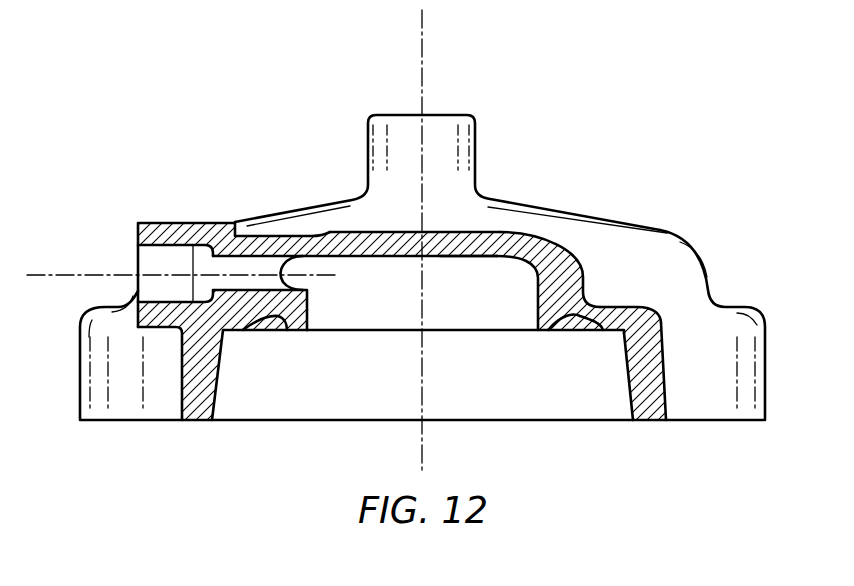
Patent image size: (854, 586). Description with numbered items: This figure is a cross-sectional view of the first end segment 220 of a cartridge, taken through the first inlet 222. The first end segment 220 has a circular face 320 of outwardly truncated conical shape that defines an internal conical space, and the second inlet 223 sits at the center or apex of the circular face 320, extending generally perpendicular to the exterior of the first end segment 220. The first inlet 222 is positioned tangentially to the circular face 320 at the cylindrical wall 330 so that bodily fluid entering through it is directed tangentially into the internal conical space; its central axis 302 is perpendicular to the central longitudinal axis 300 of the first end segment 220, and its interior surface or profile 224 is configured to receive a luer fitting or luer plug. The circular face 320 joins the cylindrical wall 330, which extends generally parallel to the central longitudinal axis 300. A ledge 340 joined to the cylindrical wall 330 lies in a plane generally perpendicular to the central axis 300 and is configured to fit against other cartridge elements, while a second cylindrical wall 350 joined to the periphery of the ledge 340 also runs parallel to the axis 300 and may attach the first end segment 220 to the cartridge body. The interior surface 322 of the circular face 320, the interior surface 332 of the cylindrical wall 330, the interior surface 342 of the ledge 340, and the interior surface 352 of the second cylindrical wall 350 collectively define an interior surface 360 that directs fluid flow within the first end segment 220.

The first end segment 220 is at (730, 130).
The first inlet 222 is at (180, 222).
The second inlet 223 is at (478, 156).
The interior surface or profile 224 is at (156, 248).
The central longitudinal axis 300 is at (424, 58).
The central axis 302 is at (312, 278).
The circular face 320 is at (452, 243).
The interior surface 322 is at (501, 262).
The cylindrical wall 330 is at (578, 267).
The interior surface 332 is at (538, 308).
The ledge 340 is at (640, 308).
The interior surface 342 is at (576, 328).
The second cylindrical wall 350 is at (655, 368).
The interior surface 352 is at (631, 385).
The interior surface 360 is at (560, 412).